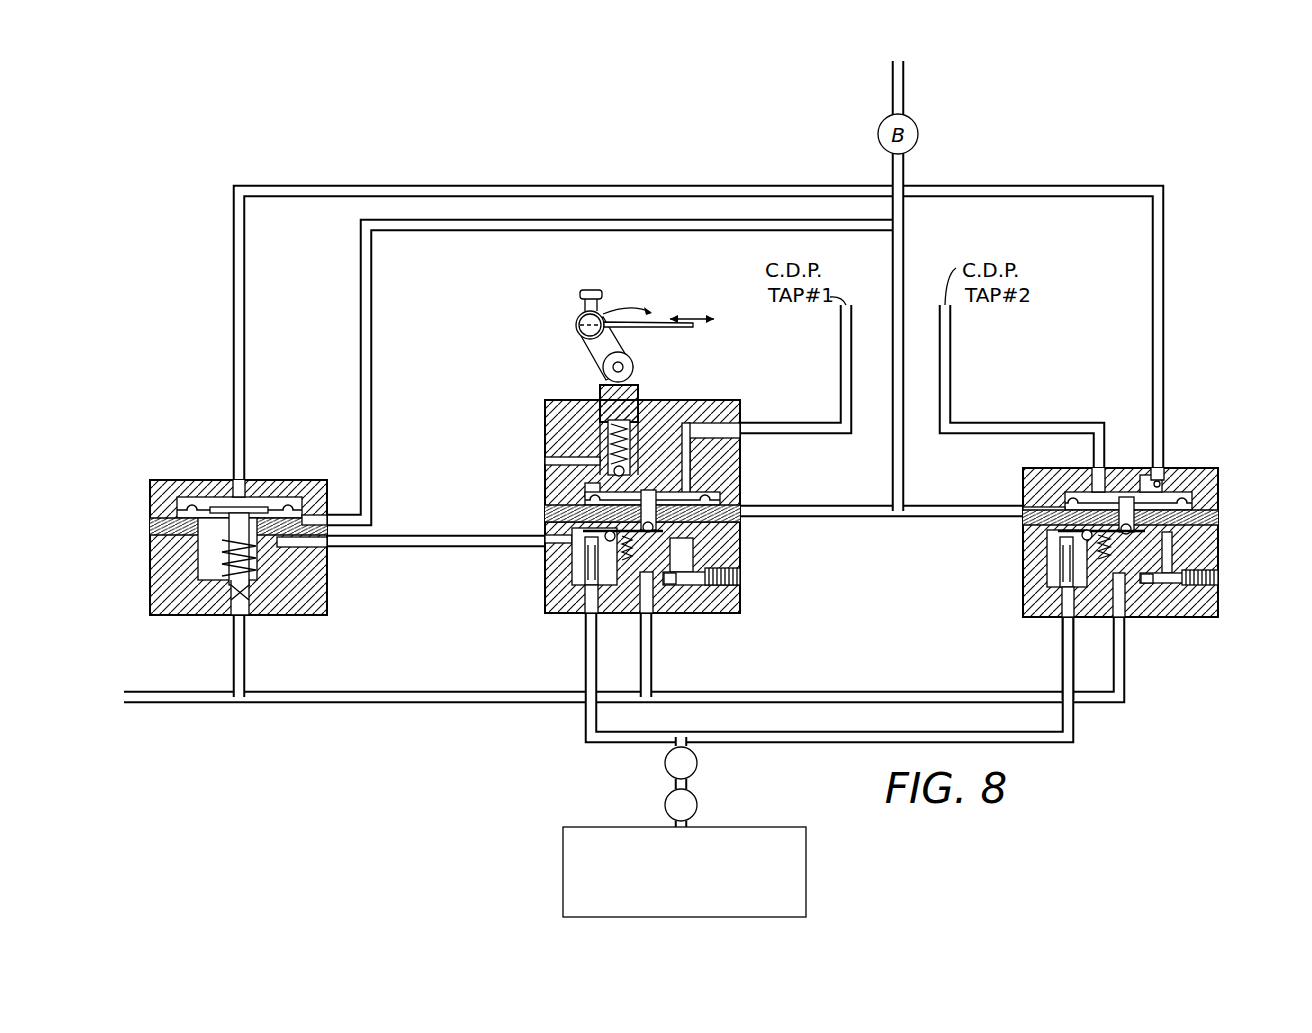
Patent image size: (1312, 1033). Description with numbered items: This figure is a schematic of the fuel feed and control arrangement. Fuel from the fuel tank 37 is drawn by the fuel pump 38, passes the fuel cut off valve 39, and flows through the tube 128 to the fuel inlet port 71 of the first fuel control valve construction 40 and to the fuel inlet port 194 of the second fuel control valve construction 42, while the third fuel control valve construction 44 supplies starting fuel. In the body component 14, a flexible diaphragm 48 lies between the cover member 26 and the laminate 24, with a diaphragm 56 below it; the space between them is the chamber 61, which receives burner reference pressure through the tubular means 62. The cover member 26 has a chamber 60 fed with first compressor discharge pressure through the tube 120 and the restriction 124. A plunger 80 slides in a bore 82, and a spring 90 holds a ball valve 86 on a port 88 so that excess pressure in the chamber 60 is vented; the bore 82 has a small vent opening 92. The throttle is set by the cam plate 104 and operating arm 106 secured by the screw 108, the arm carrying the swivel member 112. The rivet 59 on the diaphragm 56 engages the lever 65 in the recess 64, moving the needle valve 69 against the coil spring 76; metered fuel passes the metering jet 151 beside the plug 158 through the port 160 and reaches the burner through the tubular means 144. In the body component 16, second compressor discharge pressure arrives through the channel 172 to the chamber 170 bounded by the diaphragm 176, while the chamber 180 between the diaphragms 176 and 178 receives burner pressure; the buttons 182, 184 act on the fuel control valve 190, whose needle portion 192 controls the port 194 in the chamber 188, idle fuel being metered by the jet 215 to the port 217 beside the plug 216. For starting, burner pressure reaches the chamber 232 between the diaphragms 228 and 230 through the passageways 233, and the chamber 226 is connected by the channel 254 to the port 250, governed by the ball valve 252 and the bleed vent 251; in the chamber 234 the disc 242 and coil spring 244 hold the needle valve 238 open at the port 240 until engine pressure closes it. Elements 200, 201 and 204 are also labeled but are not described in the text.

The body component 14 is at (162, 613).
The body component 16 is at (1023, 605).
The laminate 24 is at (545, 513).
The cover member 26 is at (740, 400).
The fuel tank 37 is at (597, 828).
The fuel pump 38 is at (665, 803).
The fuel cut off valve 39 is at (665, 766).
The first fuel control valve construction 40 is at (572, 541).
The second fuel control valve construction 42 is at (1052, 537).
The third fuel control valve construction 44 is at (222, 546).
The flexible diaphragm 48 is at (702, 502).
The diaphragm 56 is at (700, 488).
The rivet 59 is at (693, 524).
The chamber 60 is at (672, 480).
The chamber 61 is at (678, 500).
The tubular means 62 is at (892, 504).
The recess 64 is at (684, 537).
The lever member 65 is at (668, 547).
The fuel control valve 69 is at (588, 562).
The fuel inlet port 71 is at (590, 605).
The expansive coil spring 76 is at (604, 615).
The plunger 80 is at (640, 395).
The bore 82 is at (600, 437).
The ball valve 86 is at (614, 474).
The port 88 is at (640, 488).
The expansive coil spring 90 is at (632, 405).
The vent opening 92 is at (578, 461).
The cam plate 104 is at (603, 376).
The throttle operating arm 106 is at (582, 337).
The screw 108 is at (598, 364).
The swivel member 112 is at (586, 313).
The channel or tube 120 is at (779, 429).
The restriction 124 is at (738, 468).
The conduit or tube 128 is at (587, 666).
The tubular means 144 is at (198, 693).
The metering jet valve 151 is at (661, 578).
The plug 158 is at (742, 580).
The port 160 is at (660, 592).
The chamber 170 is at (1190, 496).
The channel means 172 is at (1010, 428).
The flexible diaphragm 176 is at (1200, 499).
The flexible diaphragm 178 is at (1210, 507).
The chamber 180 is at (1105, 492).
The button 182 is at (1143, 478).
The button 184 is at (1062, 493).
The chamber 188 is at (1166, 545).
The fuel control valve 190 is at (1066, 556).
The needle portion 192 is at (1075, 576).
The fuel inlet port 194 is at (1066, 622).
The spring 200 is at (1183, 531).
The lever 201 is at (1068, 535).
The passage 204 is at (1172, 568).
The metering jet valve 215 is at (1142, 585).
The threaded plug 216 is at (1220, 578).
The port 217 is at (1130, 597).
The chamber 226 is at (243, 497).
The diaphragm 228 is at (200, 497).
The diaphragm 230 is at (258, 497).
The chamber 232 is at (238, 508).
The passageways 233 is at (373, 301).
The chamber 234 is at (302, 548).
The needle valve 238 is at (250, 568).
The port 240 is at (240, 586).
The disc 242 is at (233, 522).
The expansive coil spring 244 is at (225, 560).
The port 250 is at (1168, 481).
The bleed hole 251 is at (1150, 474).
The check valve 252 is at (1162, 472).
The channel means 254 is at (1058, 186).